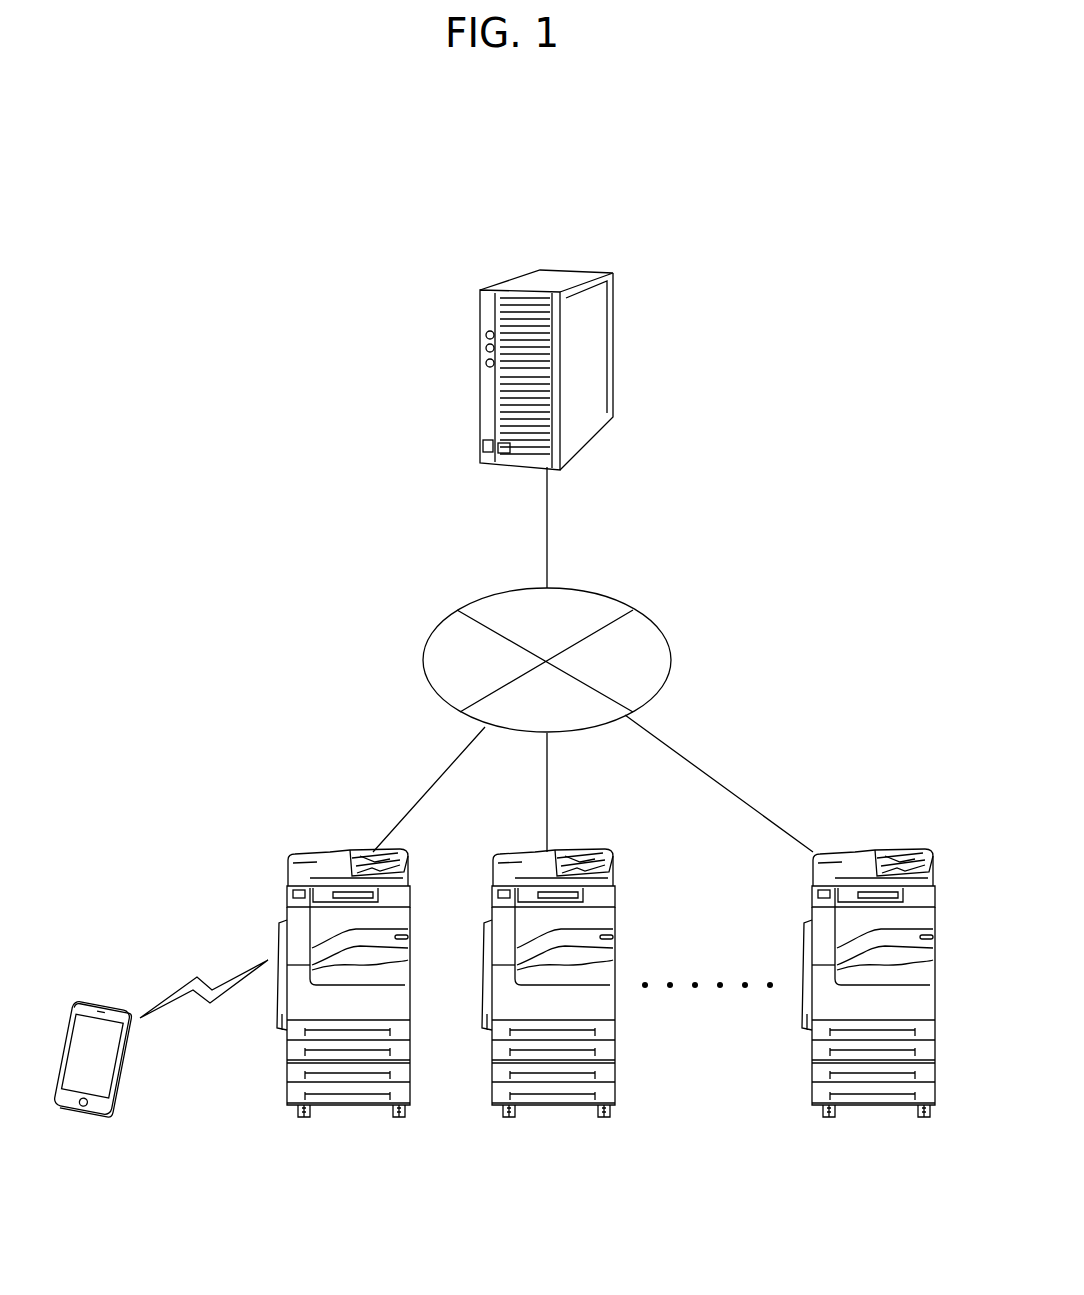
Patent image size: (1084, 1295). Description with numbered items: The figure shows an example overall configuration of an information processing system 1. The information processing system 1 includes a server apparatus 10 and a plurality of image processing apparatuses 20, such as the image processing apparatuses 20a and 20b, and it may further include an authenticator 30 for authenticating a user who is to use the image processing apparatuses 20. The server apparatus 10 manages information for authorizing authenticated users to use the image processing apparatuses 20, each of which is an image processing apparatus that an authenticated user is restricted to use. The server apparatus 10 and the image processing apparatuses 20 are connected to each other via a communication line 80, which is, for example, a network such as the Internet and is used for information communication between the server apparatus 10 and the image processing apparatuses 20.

The information processing system 1 is at (786, 170).
The server apparatus 10 is at (592, 268).
The communication line 80 is at (611, 597).
The image processing apparatuses 20 is at (947, 1124).
The image processing apparatus 20a is at (322, 852).
The image processing apparatus 20b is at (575, 852).
The authenticator 30 is at (78, 1117).